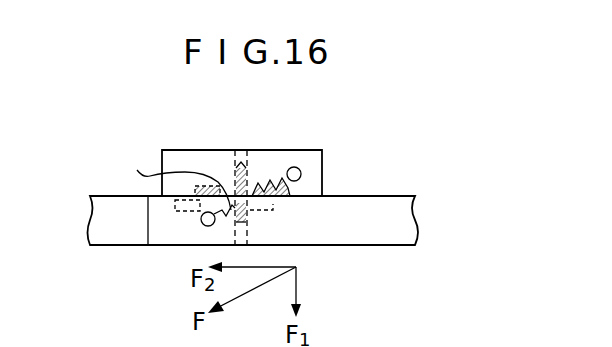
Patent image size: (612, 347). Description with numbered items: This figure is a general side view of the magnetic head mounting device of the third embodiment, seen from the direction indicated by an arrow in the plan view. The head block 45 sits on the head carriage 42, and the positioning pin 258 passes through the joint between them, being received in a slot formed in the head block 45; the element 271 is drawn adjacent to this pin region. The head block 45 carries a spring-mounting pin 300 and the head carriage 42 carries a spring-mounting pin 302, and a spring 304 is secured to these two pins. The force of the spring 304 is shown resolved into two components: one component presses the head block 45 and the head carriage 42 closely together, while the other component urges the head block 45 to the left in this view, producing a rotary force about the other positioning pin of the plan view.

The head carriage 42 is at (402, 218).
The head block 45 is at (313, 168).
The positioning pin 258 is at (233, 182).
The bore 271 is at (246, 152).
The spring-mounting pin 300 is at (298, 168).
The spring-mounting pin 302 is at (205, 226).
The spring 304 is at (183, 178).